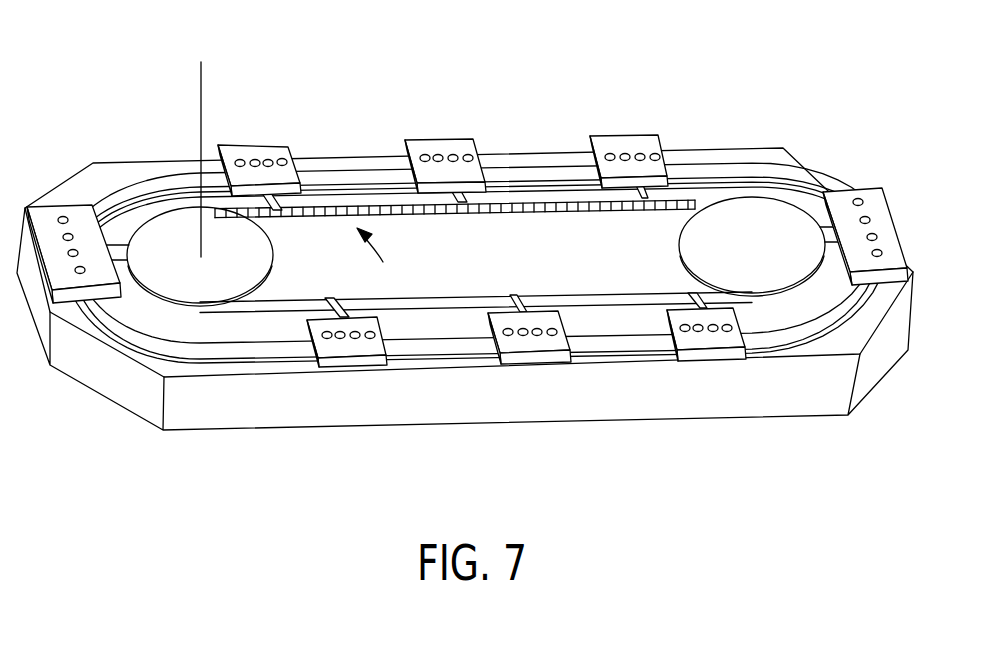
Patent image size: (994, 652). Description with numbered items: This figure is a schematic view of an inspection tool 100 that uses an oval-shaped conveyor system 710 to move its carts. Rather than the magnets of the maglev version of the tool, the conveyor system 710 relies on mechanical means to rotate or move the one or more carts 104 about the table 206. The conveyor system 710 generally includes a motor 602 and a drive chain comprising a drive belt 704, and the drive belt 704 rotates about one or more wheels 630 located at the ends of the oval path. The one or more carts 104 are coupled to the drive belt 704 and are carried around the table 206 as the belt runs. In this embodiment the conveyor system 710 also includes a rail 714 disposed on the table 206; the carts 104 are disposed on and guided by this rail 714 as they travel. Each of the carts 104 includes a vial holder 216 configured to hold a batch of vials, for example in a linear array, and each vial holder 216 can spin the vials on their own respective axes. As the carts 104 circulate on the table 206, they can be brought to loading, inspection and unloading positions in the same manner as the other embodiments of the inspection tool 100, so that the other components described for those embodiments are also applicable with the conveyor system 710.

The inspection tool 100 is at (115, 97).
The carts 104 is at (466, 150).
The table 206 is at (889, 301).
The vial holder 216 is at (284, 157).
The motor 602 is at (202, 85).
The wheels 630 is at (255, 258).
The drive belt 704 is at (580, 215).
The conveyor system 710 is at (377, 264).
The rail 714 is at (442, 348).